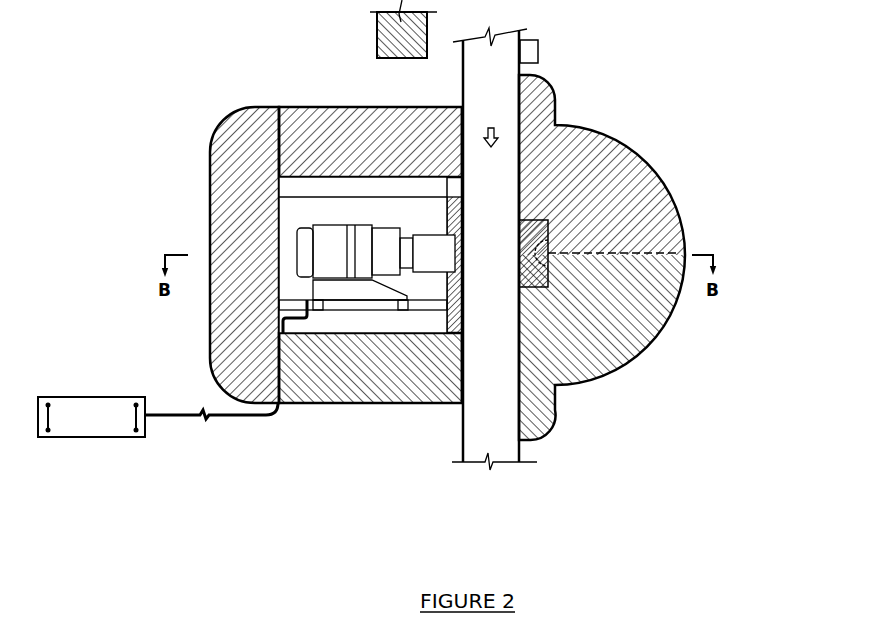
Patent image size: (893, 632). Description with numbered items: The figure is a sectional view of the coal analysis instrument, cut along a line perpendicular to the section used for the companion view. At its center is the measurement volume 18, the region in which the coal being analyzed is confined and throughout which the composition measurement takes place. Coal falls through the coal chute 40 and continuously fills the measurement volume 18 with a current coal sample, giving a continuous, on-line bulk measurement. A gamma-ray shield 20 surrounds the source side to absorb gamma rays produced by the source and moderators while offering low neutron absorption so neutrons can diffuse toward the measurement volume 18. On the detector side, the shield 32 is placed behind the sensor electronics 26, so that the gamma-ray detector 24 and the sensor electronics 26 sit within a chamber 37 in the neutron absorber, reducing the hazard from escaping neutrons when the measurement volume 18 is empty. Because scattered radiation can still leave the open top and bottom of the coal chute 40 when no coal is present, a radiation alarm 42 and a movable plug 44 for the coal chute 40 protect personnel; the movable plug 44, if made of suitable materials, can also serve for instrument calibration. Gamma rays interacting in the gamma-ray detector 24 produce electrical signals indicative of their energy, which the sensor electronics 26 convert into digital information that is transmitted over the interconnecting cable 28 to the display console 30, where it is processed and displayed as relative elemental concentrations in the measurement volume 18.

The measurement volume 18 is at (601, 340).
The gamma-ray shield 20 is at (520, 220).
The gamma-ray detector 24 is at (447, 372).
The sensor electronics 26 is at (365, 383).
The interconnecting cable 28 is at (225, 486).
The display console 30 is at (91, 454).
The shield 32 is at (203, 255).
The chamber 37 is at (363, 207).
The coal chute 40 is at (551, 282).
The radiation alarm 42 is at (610, 42).
The movable plug 44 is at (329, 44).